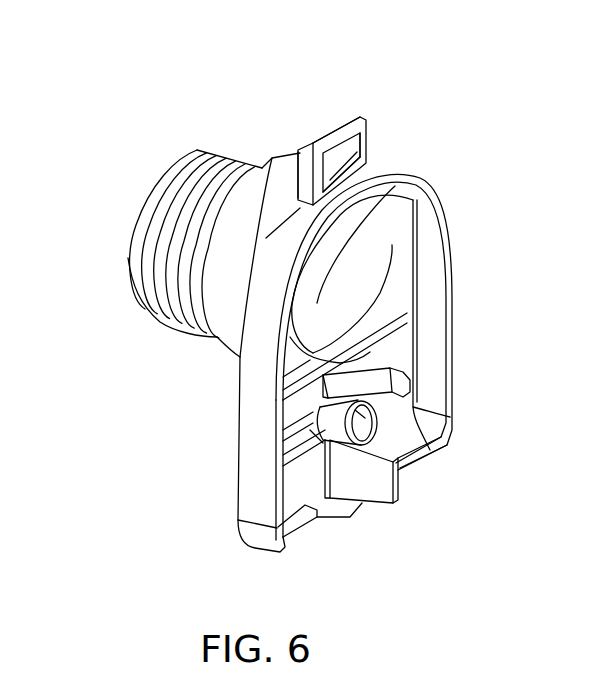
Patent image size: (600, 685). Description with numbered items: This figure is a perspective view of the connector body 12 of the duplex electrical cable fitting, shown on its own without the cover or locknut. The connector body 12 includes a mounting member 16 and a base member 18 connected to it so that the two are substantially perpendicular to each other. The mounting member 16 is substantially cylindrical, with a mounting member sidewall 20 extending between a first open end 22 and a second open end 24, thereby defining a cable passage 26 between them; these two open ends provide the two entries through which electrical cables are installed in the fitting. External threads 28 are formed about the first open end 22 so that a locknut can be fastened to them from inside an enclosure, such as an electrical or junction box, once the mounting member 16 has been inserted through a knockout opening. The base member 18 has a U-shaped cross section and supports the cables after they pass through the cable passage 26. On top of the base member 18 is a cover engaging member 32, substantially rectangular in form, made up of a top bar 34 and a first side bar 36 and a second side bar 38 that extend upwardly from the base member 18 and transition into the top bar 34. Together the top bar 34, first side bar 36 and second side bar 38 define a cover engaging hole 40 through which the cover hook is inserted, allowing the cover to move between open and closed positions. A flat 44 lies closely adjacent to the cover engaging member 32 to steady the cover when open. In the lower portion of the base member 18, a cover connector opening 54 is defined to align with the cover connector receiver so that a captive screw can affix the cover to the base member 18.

The connector body 12 is at (304, 112).
The mounting member 16 is at (259, 197).
The base member 18 is at (255, 468).
The mounting member sidewall 20 is at (230, 337).
The first open end 22 is at (132, 265).
The second open end 24 is at (368, 272).
The cable passage 26 is at (315, 293).
The external threads 28 is at (197, 218).
The cover engaging member 32 is at (350, 120).
The top bar 34 is at (325, 122).
The first side bar 36 is at (293, 130).
The second side bar 38 is at (360, 148).
The cover engaging hole 40 is at (350, 168).
The flat 44 is at (388, 178).
The cover connector opening 54 is at (370, 435).